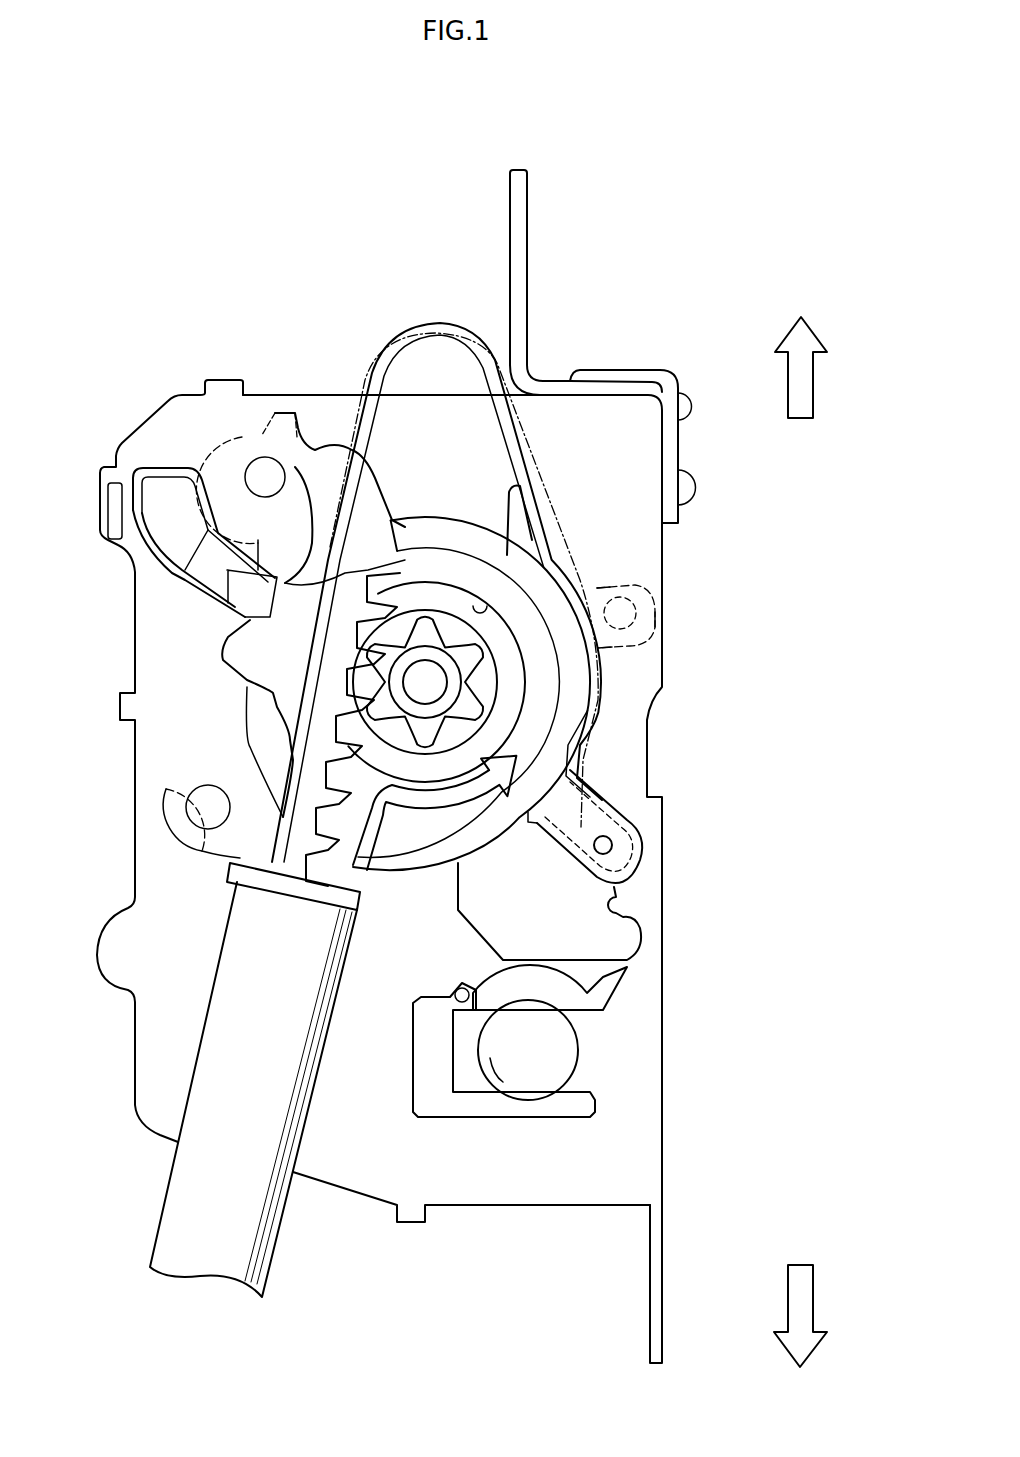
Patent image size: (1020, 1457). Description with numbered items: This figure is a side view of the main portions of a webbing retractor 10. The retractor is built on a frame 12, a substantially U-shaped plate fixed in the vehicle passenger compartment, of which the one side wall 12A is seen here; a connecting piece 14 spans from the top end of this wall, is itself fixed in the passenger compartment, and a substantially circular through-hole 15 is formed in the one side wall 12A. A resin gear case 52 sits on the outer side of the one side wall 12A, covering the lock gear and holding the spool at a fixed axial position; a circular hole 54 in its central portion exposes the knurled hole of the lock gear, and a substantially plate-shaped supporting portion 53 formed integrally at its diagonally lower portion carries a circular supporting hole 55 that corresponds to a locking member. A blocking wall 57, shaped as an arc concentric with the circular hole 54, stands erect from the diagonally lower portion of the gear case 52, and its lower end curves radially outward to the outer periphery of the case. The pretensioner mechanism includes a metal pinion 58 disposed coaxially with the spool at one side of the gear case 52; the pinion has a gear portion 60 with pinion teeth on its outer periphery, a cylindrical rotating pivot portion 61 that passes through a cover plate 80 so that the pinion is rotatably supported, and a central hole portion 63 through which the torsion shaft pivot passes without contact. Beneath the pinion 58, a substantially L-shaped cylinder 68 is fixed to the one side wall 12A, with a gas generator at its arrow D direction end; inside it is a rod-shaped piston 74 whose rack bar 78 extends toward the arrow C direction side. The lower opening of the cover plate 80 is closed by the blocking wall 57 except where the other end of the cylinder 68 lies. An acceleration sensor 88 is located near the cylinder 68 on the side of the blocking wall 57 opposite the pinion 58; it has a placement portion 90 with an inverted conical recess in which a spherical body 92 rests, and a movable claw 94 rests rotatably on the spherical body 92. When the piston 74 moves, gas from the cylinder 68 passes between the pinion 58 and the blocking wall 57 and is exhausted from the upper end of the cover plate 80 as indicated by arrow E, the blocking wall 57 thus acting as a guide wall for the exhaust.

The webbing retractor 10 is at (710, 250).
The frame 12 is at (148, 1049).
The one side wall 12A is at (350, 1178).
The connecting piece 14 is at (527, 278).
The through-hole 15 is at (625, 917).
The gear case 52 is at (219, 646).
The supporting portion 53 is at (627, 818).
The circular hole 54 is at (487, 606).
The supporting hole 55 is at (610, 848).
The blocking wall 57 is at (430, 818).
The pinion 58 is at (500, 656).
The gear portion 60 is at (473, 712).
The rotating pivot portion 61 is at (428, 670).
The hole portion 63 is at (466, 685).
The cylinder 68 is at (181, 1190).
The piston 74 is at (330, 722).
The rack bar 78 is at (303, 779).
The cover plate 80 is at (392, 343).
The acceleration sensor 88 is at (530, 1118).
The placement portion 90 is at (583, 1107).
The spherical body 92 is at (557, 1053).
The movable claw 94 is at (603, 985).
The arrow C direction C is at (813, 385).
The arrow D direction D is at (813, 1300).
The arrow E is at (388, 860).